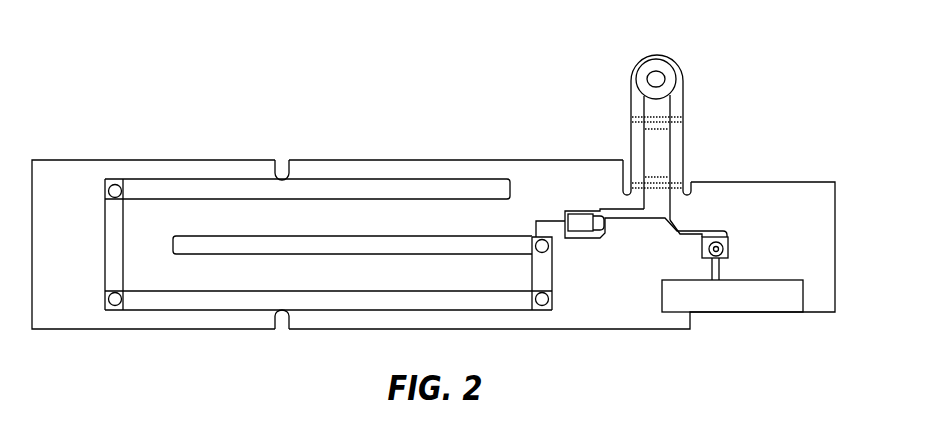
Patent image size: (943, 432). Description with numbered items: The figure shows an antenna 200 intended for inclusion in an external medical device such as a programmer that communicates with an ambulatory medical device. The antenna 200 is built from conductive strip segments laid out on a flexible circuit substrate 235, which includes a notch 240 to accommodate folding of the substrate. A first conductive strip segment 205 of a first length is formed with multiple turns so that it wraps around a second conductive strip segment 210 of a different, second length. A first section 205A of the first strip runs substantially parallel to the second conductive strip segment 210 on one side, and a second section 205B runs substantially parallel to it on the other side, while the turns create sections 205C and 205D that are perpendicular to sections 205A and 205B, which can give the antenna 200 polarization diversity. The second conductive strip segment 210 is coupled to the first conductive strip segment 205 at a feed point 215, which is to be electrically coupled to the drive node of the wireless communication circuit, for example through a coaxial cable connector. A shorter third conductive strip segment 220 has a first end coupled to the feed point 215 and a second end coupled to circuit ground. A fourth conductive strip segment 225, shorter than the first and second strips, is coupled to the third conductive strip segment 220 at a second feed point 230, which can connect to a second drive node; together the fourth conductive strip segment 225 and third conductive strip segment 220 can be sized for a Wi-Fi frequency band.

The antenna 200 is at (140, 55).
The first conductive strip segment 205 is at (182, 302).
The first section of the first conductive strip segment 205A is at (499, 192).
The second section of the first conductive strip segment 205B is at (553, 297).
The section of the first conductive strip segment 205C is at (545, 275).
The section of the first conductive strip segment 205D is at (117, 248).
The second conductive strip segment 210 is at (233, 245).
The feed point 215 is at (583, 228).
The third conductive strip segment 220 is at (670, 150).
The fourth conductive strip segment 225 is at (758, 305).
The second feed point 230 is at (732, 247).
The flexible circuit substrate 235 is at (457, 159).
The notch 240 is at (283, 159).